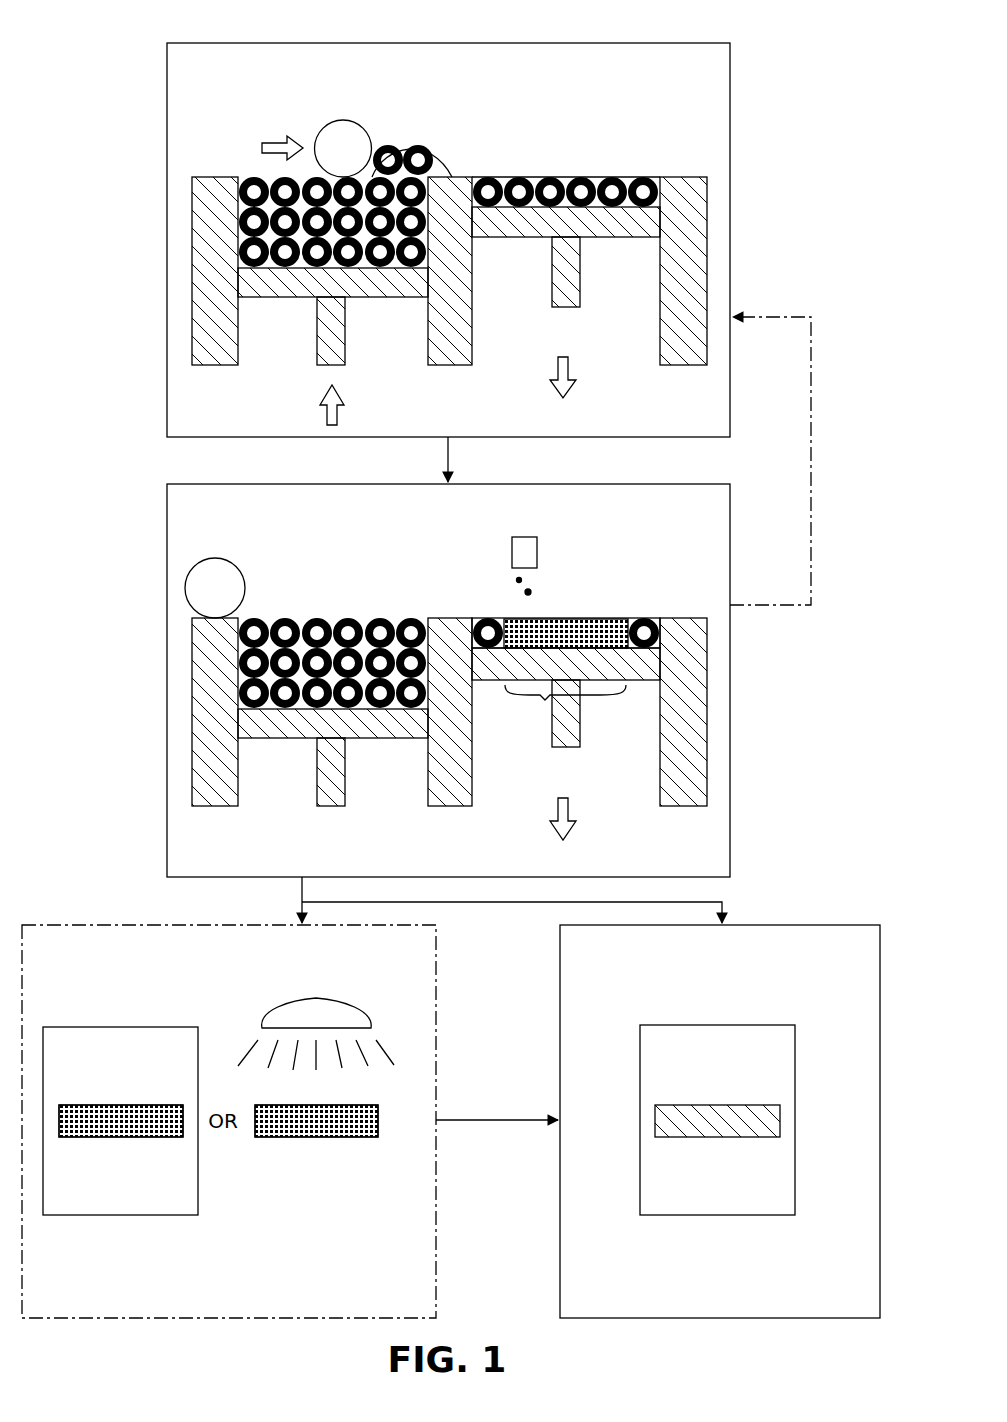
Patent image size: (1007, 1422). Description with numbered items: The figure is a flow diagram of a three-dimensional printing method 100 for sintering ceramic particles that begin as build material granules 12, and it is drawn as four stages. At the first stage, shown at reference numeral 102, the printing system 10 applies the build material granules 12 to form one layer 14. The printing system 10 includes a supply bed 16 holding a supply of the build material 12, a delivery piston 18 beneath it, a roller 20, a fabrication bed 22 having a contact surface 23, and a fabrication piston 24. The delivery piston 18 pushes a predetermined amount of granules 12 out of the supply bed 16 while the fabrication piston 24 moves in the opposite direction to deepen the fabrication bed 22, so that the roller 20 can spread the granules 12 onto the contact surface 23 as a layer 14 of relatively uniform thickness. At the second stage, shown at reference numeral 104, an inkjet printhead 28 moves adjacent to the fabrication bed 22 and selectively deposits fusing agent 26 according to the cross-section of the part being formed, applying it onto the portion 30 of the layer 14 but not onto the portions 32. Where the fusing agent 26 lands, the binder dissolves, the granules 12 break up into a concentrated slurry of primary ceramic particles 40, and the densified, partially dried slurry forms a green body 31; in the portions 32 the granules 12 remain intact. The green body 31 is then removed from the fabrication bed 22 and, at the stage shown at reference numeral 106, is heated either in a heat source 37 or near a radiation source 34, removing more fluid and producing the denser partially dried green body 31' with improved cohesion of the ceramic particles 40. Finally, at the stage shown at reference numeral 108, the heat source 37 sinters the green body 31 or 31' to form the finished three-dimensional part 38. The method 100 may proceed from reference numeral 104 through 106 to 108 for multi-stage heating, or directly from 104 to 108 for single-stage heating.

The 3D printing method 100 is at (105, 78).
The build material applying step 102 is at (730, 239).
The fusing agent dispensing step 104 is at (730, 677).
The initial heating step 106 is at (438, 1288).
The sintering step 108 is at (840, 925).
The printing system 10 is at (298, 98).
The build material granules 12 is at (245, 177).
The layer 14 is at (612, 170).
The supply bed 16 is at (238, 177).
The delivery piston 18 is at (330, 345).
The roller 20 is at (343, 140).
The fabrication bed 22 is at (490, 185).
The contact surface 23 is at (658, 222).
The fabrication piston 24 is at (570, 288).
The fusing agent 26 is at (532, 593).
The inkjet printhead 28 is at (527, 553).
The portion 30 is at (565, 705).
The green body 31 is at (559, 590).
The partially dried green body 31' is at (221, 1180).
The portions 32 is at (487, 611).
The radiation source 34 is at (317, 998).
The heat source 37 is at (120, 1027).
The 3D part 38 is at (686, 1100).
The primary ceramic particles 40 is at (552, 620).